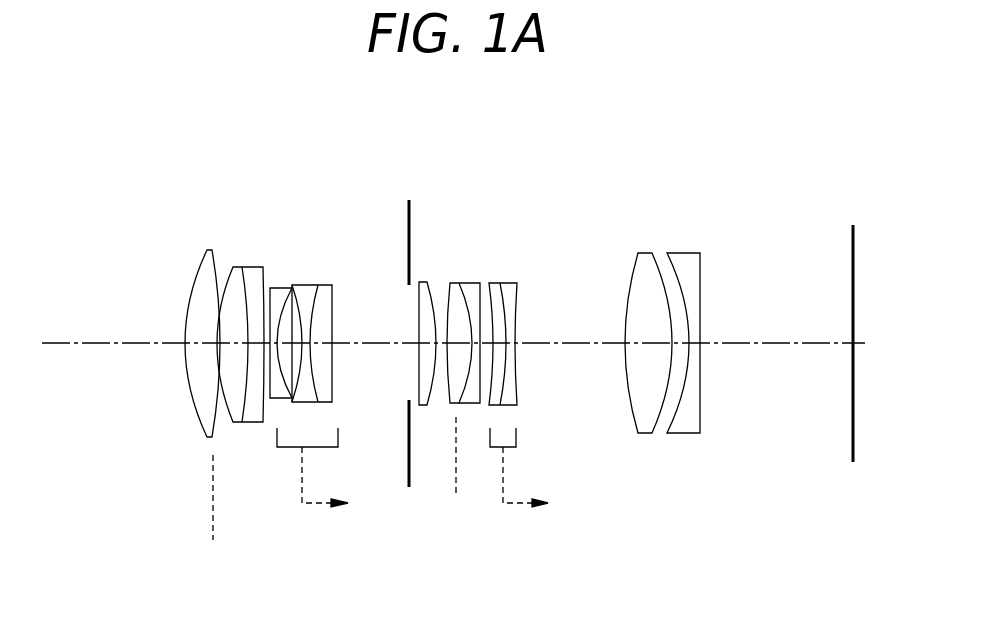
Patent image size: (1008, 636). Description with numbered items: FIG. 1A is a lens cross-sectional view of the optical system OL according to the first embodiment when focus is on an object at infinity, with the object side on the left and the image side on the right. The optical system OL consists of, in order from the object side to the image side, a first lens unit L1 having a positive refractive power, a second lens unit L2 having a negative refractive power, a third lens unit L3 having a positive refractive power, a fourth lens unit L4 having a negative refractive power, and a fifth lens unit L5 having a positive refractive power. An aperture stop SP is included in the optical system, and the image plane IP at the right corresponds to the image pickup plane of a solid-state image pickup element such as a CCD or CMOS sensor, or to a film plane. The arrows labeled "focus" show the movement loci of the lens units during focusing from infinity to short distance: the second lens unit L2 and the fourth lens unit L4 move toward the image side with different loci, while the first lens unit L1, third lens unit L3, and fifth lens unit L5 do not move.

The optical system OL is at (708, 145).
The first lens unit L1 is at (265, 233).
The second lens unit L2 is at (338, 233).
The third lens unit L3 is at (480, 235).
The fourth lens unit L4 is at (517, 235).
The fifth lens unit L5 is at (703, 222).
The aperture stop SP is at (408, 236).
The image plane IP is at (855, 257).